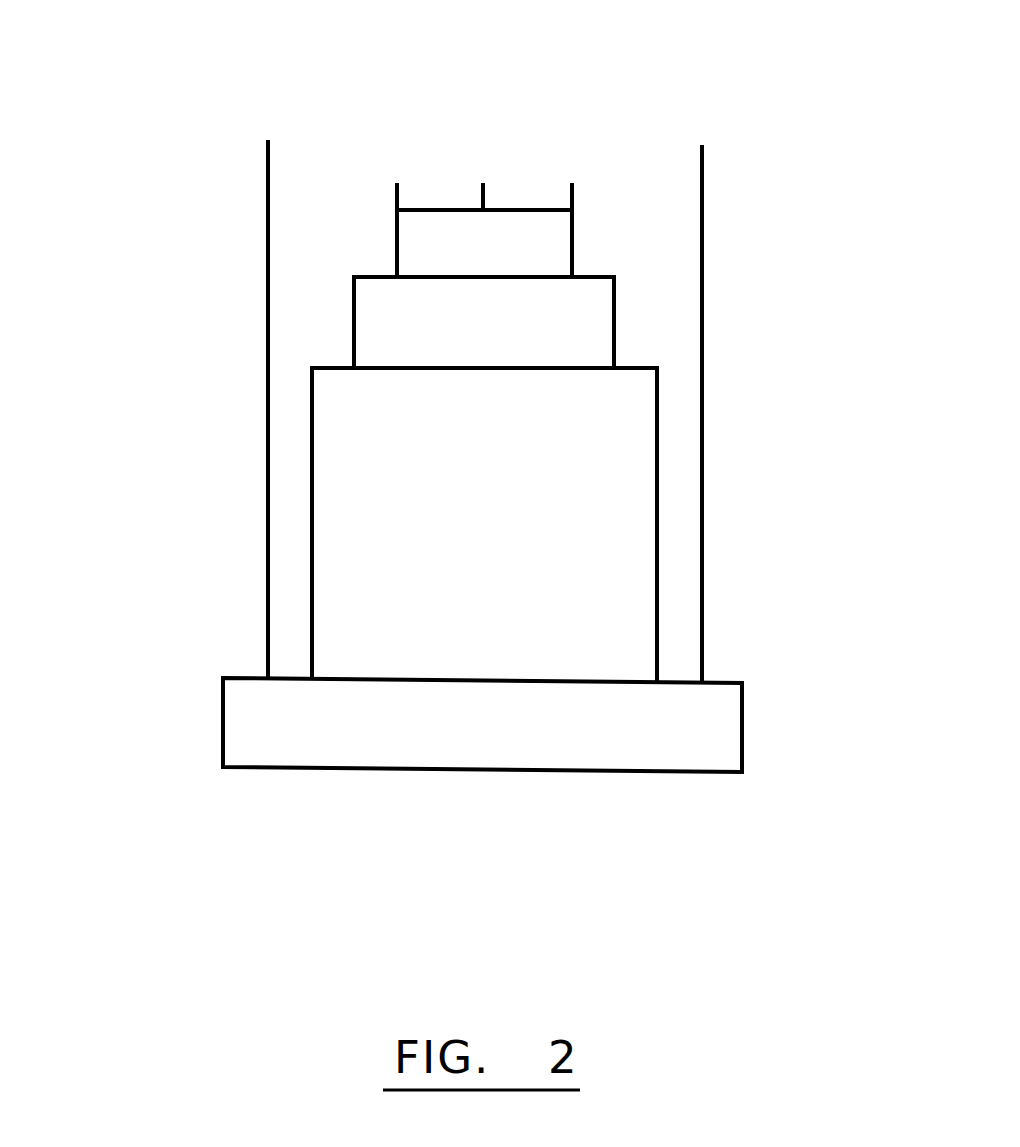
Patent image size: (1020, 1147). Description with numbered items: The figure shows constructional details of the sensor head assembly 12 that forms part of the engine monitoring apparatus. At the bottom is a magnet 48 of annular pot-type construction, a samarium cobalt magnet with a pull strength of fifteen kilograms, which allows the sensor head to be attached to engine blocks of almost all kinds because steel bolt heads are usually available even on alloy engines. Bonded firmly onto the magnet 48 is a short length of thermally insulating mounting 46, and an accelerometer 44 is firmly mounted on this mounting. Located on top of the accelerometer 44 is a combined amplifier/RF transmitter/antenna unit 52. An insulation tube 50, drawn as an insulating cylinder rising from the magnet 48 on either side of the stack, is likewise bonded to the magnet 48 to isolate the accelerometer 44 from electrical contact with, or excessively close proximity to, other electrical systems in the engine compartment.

The rotor assembly 12 is at (215, 571).
The accelerometer 44 is at (614, 325).
The thermally insulating mounting 46 is at (657, 552).
The magnet 48 is at (742, 772).
The insulation tube 50 is at (268, 368).
The combined amplifier/RF transmitter/antenna unit 52 is at (523, 210).